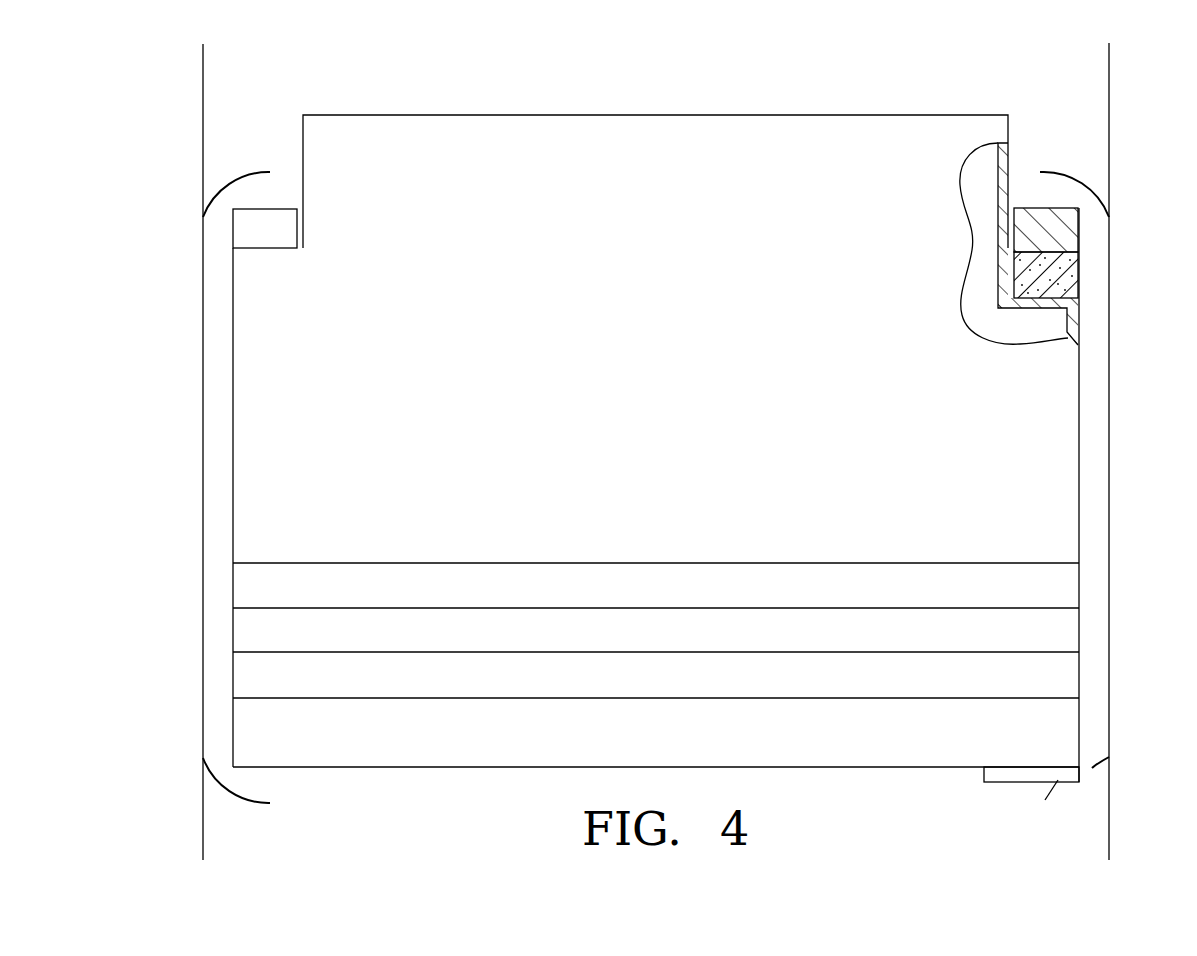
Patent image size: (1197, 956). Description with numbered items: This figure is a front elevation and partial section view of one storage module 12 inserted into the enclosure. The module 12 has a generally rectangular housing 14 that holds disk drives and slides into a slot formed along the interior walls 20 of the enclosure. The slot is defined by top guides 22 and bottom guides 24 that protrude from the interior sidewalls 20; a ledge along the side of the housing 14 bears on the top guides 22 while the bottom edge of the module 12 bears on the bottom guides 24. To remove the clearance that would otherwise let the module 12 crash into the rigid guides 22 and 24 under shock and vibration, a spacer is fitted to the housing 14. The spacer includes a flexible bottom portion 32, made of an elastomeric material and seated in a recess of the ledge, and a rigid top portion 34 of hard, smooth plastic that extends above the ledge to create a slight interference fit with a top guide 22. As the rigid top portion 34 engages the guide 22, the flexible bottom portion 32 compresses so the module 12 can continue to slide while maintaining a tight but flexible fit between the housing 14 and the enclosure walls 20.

The module 12 is at (869, 98).
The housing 14 is at (1070, 518).
The interior walls 20 is at (203, 390).
The top guides 22 is at (257, 196).
The bottom guides 24 is at (262, 790).
The flexible bottom portion 32 is at (1078, 277).
The rigid top portion 34 is at (263, 243).